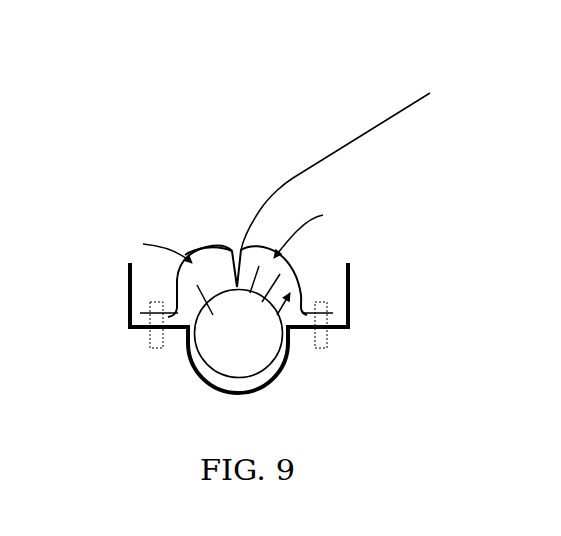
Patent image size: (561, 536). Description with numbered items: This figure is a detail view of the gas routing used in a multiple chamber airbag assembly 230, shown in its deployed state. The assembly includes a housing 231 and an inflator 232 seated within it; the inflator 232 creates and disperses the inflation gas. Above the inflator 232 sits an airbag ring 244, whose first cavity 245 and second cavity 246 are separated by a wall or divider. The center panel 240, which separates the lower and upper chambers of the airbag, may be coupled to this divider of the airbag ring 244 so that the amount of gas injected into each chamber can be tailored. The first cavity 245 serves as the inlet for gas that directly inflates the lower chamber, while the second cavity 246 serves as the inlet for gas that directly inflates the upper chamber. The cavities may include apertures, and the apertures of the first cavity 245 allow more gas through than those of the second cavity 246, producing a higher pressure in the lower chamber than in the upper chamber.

The multiple chamber airbag assembly 230 is at (146, 130).
The housing 231 is at (147, 332).
The inflator 232 is at (263, 345).
The center panel 240 is at (293, 177).
The airbag ring 244 is at (198, 250).
The first cavity 245 is at (318, 229).
The second cavity 246 is at (147, 248).